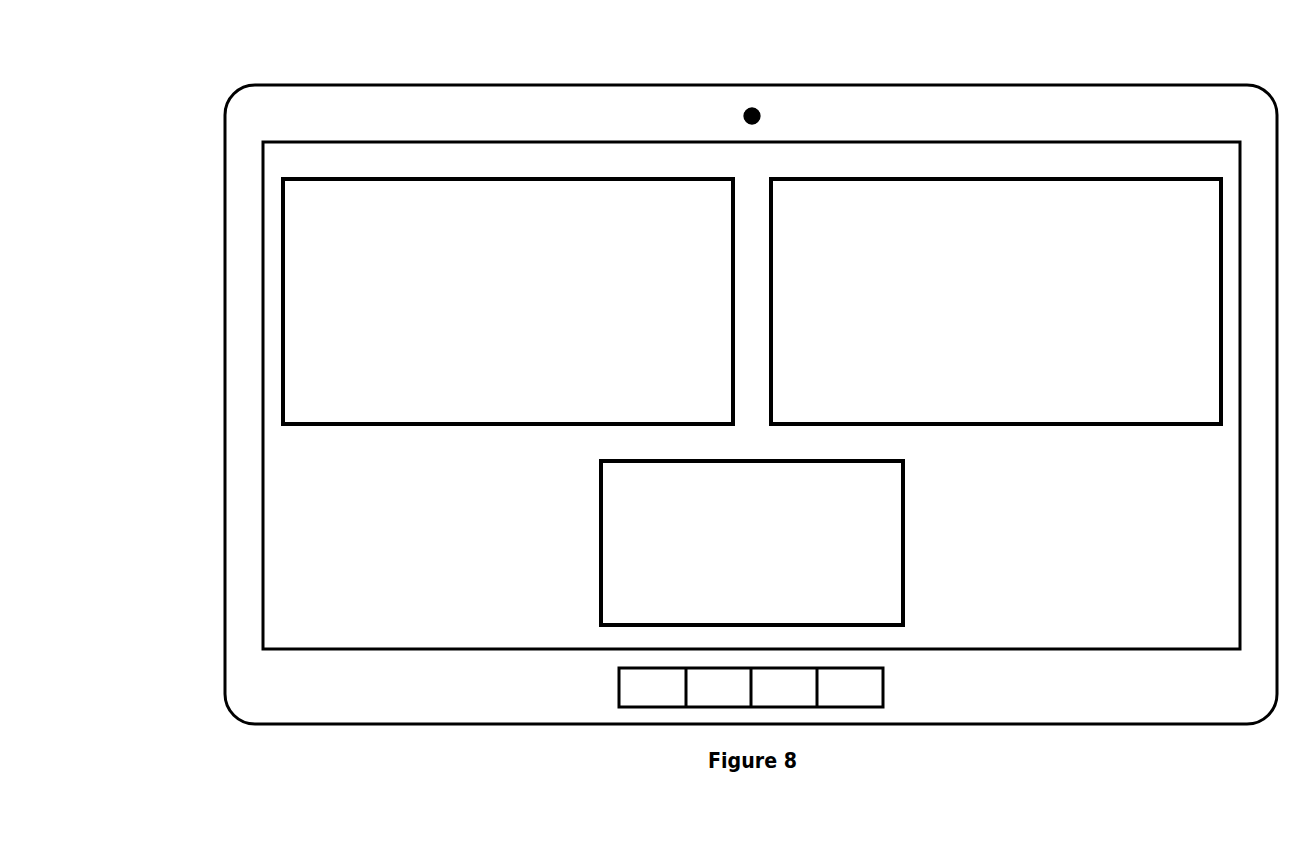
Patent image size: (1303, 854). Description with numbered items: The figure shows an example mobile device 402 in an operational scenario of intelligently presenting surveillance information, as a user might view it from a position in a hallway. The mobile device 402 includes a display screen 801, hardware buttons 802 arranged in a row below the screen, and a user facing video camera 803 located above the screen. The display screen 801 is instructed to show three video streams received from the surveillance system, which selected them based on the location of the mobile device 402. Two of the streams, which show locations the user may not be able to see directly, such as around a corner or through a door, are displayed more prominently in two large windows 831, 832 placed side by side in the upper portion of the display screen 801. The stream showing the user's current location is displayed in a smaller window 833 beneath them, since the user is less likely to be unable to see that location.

The mobile device 402 is at (160, 78).
The display screen 801 is at (284, 142).
The hardware buttons 802 is at (620, 694).
The user facing video camera 803 is at (748, 116).
The window 831 is at (412, 427).
The window 832 is at (1038, 427).
The smaller window 833 is at (600, 538).